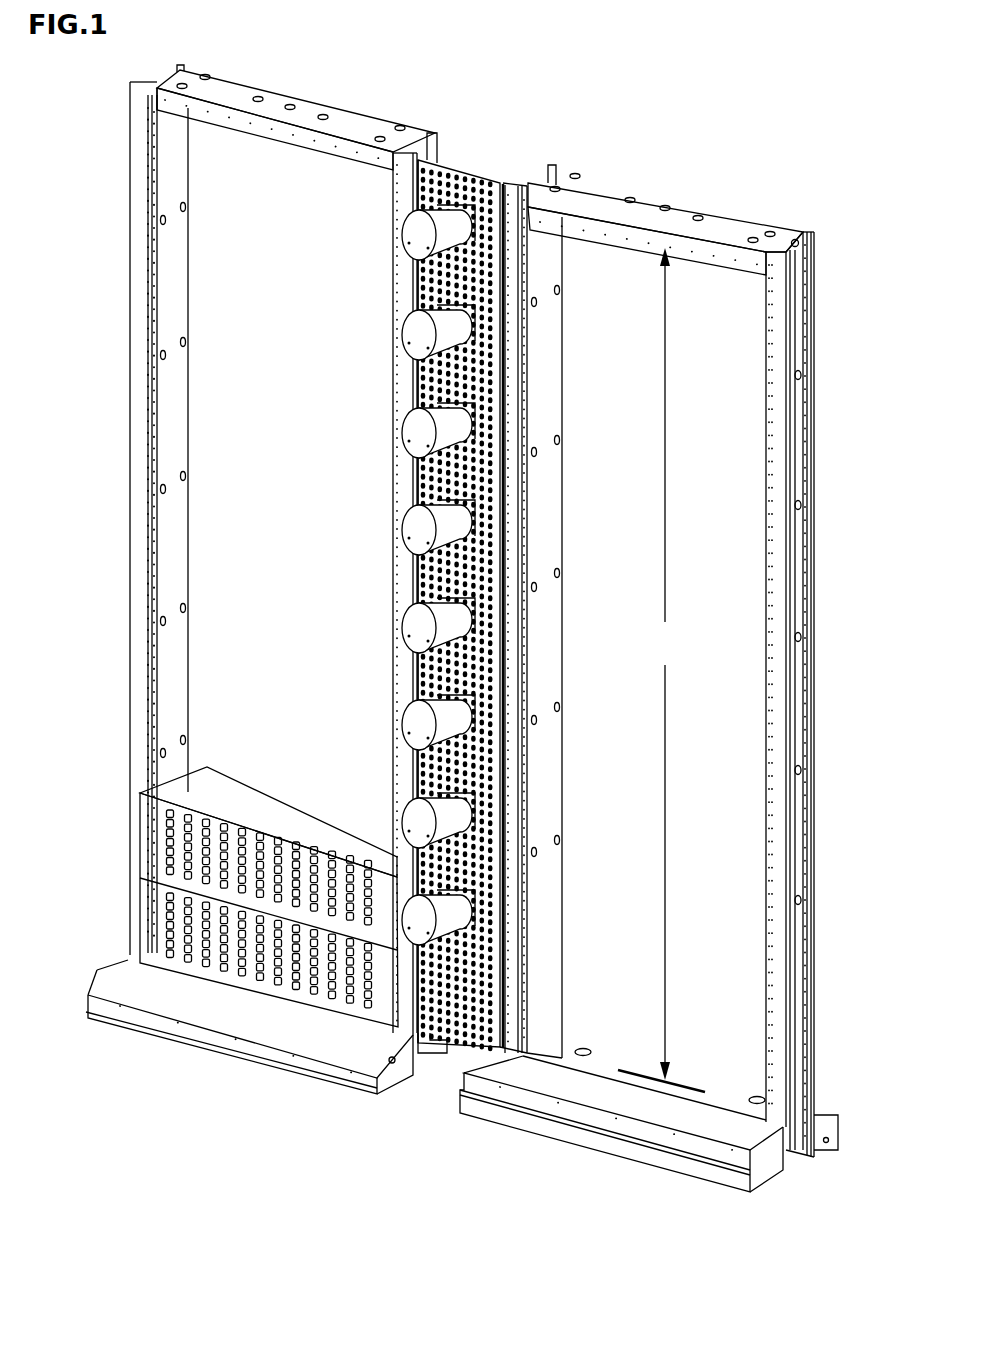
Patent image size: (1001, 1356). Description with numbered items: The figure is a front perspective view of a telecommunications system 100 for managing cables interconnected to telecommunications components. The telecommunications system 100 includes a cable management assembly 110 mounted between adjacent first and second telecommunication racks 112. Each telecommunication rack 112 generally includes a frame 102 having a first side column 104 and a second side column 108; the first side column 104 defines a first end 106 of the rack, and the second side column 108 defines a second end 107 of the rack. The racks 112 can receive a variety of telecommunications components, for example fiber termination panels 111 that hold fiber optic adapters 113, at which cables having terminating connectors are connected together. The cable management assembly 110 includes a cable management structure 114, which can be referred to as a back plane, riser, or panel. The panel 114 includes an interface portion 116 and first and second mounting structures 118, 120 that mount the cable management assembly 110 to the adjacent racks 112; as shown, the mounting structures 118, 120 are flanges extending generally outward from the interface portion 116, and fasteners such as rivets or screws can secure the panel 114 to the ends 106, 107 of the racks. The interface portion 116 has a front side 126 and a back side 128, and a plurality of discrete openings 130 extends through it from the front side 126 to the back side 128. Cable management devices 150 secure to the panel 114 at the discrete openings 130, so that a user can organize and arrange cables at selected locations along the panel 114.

The telecommunications system 100 is at (552, 86).
The frame 102 is at (230, 92).
The first side column 104 is at (402, 568).
The first end 106 is at (402, 660).
The second end 107 is at (140, 566).
The second side column 108 is at (141, 500).
The cable management assembly 110 is at (567, 630).
The fiber termination panel 111 is at (150, 861).
The telecommunication rack 112 is at (243, 97).
The fiber optic adapter 113 is at (170, 814).
The cable management structure 114 is at (430, 278).
The interface portion 116 is at (437, 485).
The first mounting structure 118 is at (505, 183).
The second mounting structure 120 is at (428, 152).
The front side 126 is at (414, 195).
The back side 128 is at (479, 164).
The discrete openings 130 is at (493, 347).
The cable management device 150 is at (415, 346).